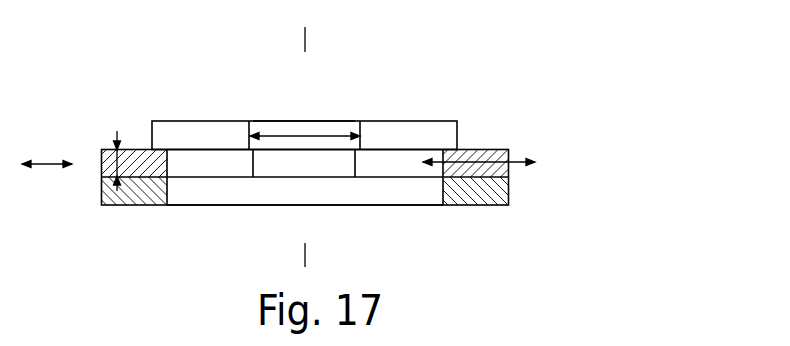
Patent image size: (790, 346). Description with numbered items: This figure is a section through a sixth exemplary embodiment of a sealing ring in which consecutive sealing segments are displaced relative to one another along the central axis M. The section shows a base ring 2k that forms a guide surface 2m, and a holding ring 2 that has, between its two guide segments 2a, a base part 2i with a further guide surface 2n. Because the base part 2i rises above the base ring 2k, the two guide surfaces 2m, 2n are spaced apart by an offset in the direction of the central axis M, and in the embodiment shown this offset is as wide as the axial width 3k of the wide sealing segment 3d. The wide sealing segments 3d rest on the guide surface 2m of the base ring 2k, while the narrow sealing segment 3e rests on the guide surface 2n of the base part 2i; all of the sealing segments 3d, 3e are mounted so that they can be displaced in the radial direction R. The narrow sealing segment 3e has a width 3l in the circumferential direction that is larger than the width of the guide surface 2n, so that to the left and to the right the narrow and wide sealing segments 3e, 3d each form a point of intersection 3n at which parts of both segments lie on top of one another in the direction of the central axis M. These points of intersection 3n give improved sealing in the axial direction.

The holding ring 2 is at (473, 198).
The guide segment 2a is at (232, 121).
The base part 2i is at (309, 170).
The base ring 2k is at (497, 192).
The guide surface 2m is at (182, 175).
The guide surface 2n is at (273, 131).
The wide sealing segment 3d is at (113, 167).
The narrow sealing segment 3e is at (283, 128).
The axial width 3k is at (116, 143).
The width 3l is at (345, 122).
The point of intersection 3n is at (252, 151).
The central axis M is at (305, 38).
The radial direction R is at (43, 163).